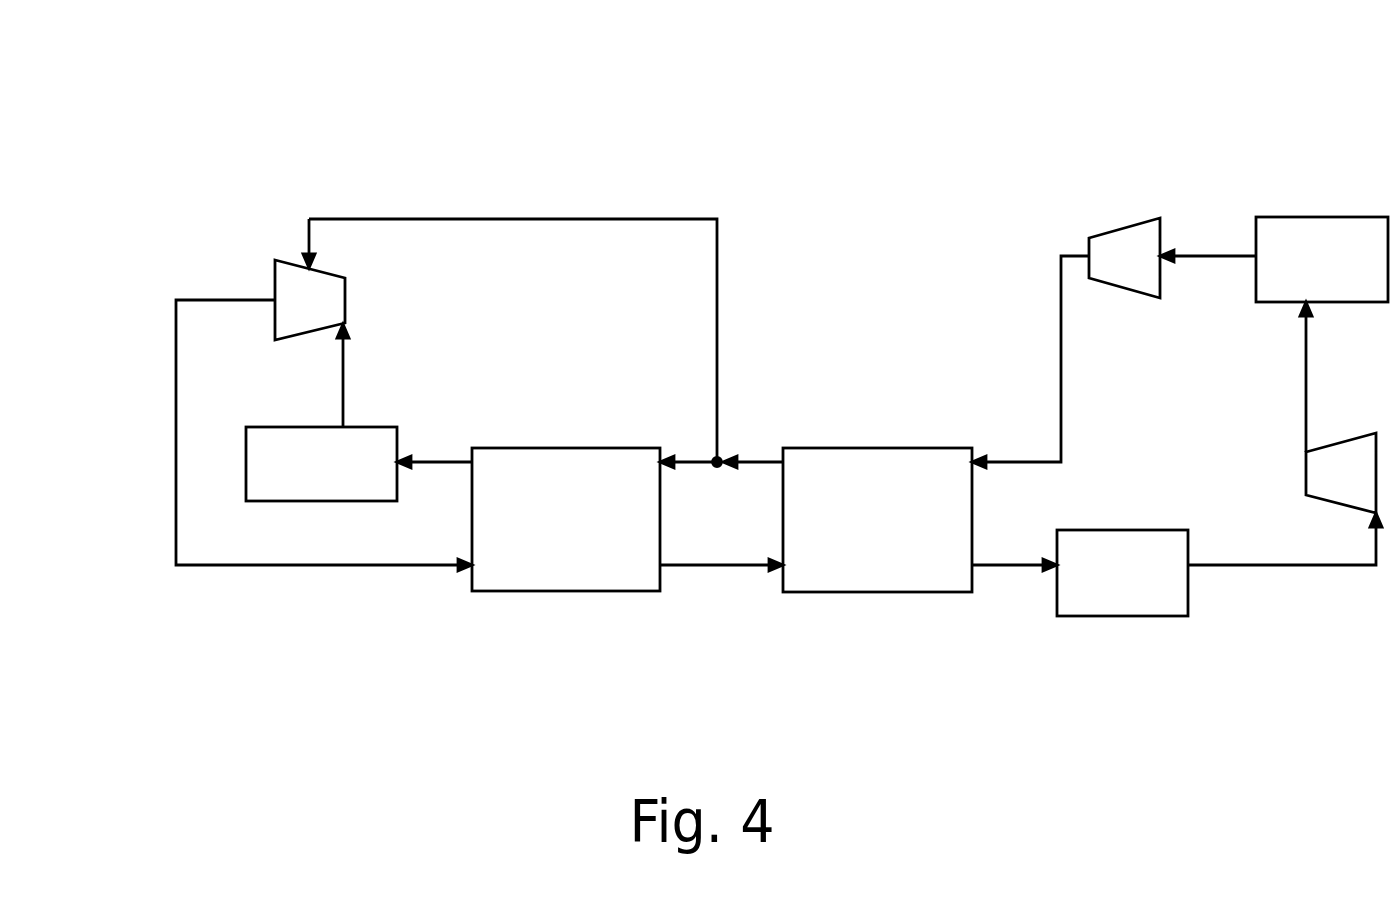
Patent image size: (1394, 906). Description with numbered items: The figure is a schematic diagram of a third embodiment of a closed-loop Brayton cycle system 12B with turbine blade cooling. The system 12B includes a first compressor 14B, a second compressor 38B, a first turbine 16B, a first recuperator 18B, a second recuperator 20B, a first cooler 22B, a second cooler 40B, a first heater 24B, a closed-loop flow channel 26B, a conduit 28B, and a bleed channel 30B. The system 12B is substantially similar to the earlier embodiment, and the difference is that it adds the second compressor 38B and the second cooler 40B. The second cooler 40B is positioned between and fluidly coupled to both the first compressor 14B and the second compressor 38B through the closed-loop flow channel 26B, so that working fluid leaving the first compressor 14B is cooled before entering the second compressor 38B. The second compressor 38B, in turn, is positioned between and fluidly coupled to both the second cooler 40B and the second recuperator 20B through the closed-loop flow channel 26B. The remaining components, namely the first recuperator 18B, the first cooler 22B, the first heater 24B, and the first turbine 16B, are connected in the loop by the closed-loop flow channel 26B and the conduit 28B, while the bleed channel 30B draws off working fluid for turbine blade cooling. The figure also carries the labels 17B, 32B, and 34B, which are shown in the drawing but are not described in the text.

The closed-loop Brayton cycle system 12B is at (964, 111).
The first compressor 14B is at (1353, 453).
The first turbine 16B is at (266, 274).
The turbine inlet 17B is at (322, 285).
The first recuperator 18B is at (545, 580).
The second recuperator 20B is at (867, 574).
The first cooler 22B is at (1128, 607).
The first heater 24B is at (297, 501).
The closed-loop flow channel 26B is at (176, 404).
The conduit 28B is at (760, 460).
The bleed channel 30B is at (719, 260).
The junction 32B is at (713, 457).
The bypass inlet 34B is at (299, 260).
The second compressor 38B is at (1117, 240).
The second cooler 40B is at (1326, 223).